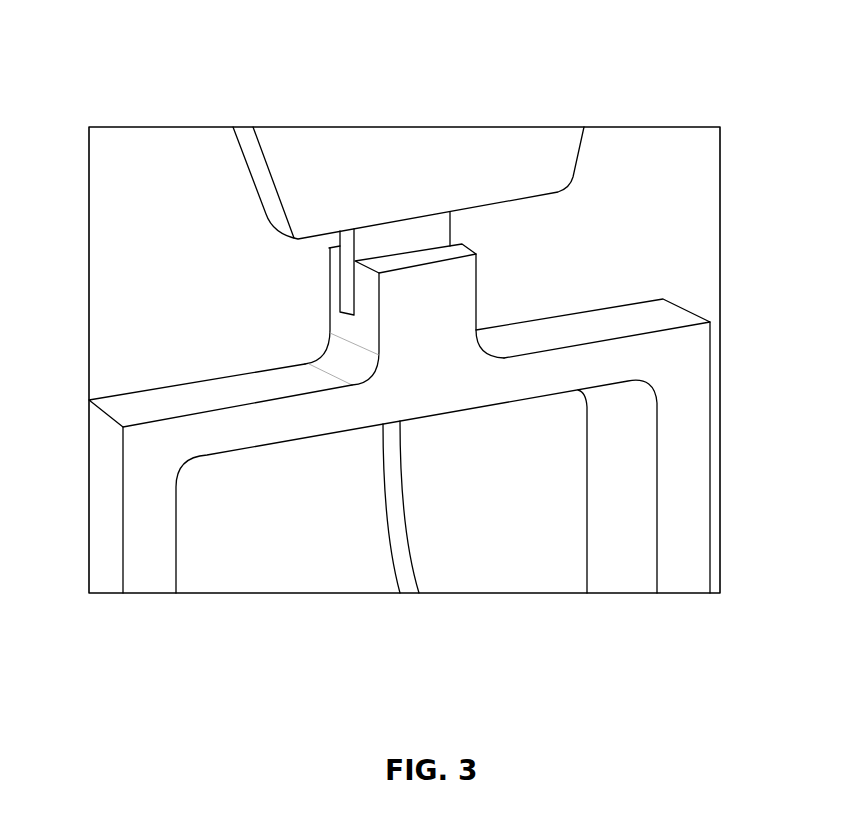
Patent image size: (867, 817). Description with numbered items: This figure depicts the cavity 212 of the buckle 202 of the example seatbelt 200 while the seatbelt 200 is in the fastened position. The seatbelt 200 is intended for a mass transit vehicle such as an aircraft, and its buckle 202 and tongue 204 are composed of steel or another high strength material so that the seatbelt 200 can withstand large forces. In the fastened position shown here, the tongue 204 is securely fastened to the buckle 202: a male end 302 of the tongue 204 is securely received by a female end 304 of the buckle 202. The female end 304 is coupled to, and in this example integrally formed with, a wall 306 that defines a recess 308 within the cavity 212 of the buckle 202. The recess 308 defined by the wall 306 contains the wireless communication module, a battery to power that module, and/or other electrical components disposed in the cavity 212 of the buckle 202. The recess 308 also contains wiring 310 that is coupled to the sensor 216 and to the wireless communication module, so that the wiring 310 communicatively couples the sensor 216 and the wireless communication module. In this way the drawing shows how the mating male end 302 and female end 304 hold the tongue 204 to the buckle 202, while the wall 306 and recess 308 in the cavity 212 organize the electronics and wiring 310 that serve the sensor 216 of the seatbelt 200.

The seatbelt 200 is at (162, 105).
The cavity 212 is at (217, 76).
The tongue 204 is at (496, 140).
The male end 302 is at (407, 237).
The female end 304 is at (435, 308).
The wall 306 is at (240, 426).
The buckle 202 is at (690, 517).
The recess 308 is at (262, 580).
The sensor 216 is at (374, 436).
The wiring 310 is at (400, 547).